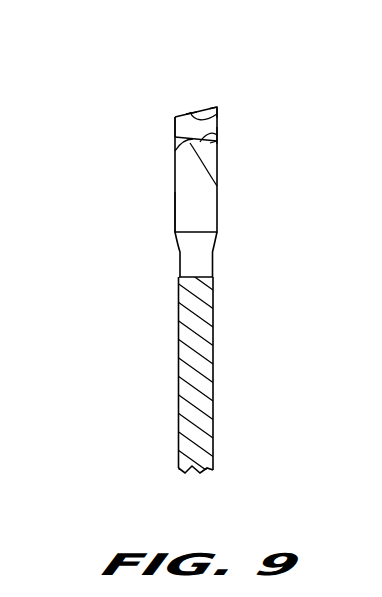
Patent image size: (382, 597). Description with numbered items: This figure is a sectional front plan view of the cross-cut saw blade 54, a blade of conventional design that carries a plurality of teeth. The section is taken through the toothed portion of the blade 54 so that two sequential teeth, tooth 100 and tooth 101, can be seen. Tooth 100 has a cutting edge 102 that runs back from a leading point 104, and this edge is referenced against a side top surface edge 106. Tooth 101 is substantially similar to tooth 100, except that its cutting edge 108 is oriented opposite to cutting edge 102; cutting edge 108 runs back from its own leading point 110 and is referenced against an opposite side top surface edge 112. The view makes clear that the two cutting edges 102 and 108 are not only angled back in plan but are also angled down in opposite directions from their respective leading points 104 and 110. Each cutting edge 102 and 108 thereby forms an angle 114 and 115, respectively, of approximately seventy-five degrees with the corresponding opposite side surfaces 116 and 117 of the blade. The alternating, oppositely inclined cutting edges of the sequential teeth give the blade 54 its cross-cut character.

The blade 54 is at (222, 296).
The tooth 100 is at (172, 163).
The tooth 101 is at (223, 126).
The cutting edge 102 is at (217, 134).
The leading point 104 is at (172, 130).
The side top surface edge 106 is at (175, 143).
The cutting edge 108 is at (196, 112).
The leading point 110 is at (221, 101).
The opposite side top surface edge 112 is at (221, 114).
The angle 114 is at (180, 114).
The angle 115 is at (217, 186).
The side surface 116 is at (174, 193).
The side surface 117 is at (217, 140).